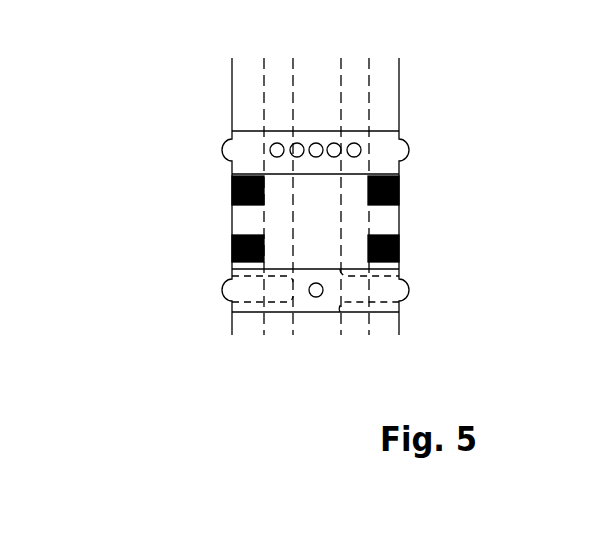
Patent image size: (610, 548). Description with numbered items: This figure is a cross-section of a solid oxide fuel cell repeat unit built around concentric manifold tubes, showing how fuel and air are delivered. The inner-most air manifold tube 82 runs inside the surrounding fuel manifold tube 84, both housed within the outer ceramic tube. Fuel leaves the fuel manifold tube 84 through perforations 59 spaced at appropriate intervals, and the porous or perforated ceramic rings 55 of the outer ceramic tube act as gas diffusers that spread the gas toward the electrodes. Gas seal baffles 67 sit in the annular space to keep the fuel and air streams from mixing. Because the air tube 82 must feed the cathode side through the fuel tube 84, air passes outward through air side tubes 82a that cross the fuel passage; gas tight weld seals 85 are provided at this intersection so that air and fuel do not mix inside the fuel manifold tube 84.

The air manifold tube 82 is at (341, 80).
The air side tube 82a is at (324, 288).
The fuel manifold tube 84 is at (258, 75).
The porous or perforated ceramic ring 55 is at (221, 149).
The perforations 59 is at (364, 148).
The gas seal baffle 67 is at (229, 187).
The gas tight weld seal 85 is at (380, 302).